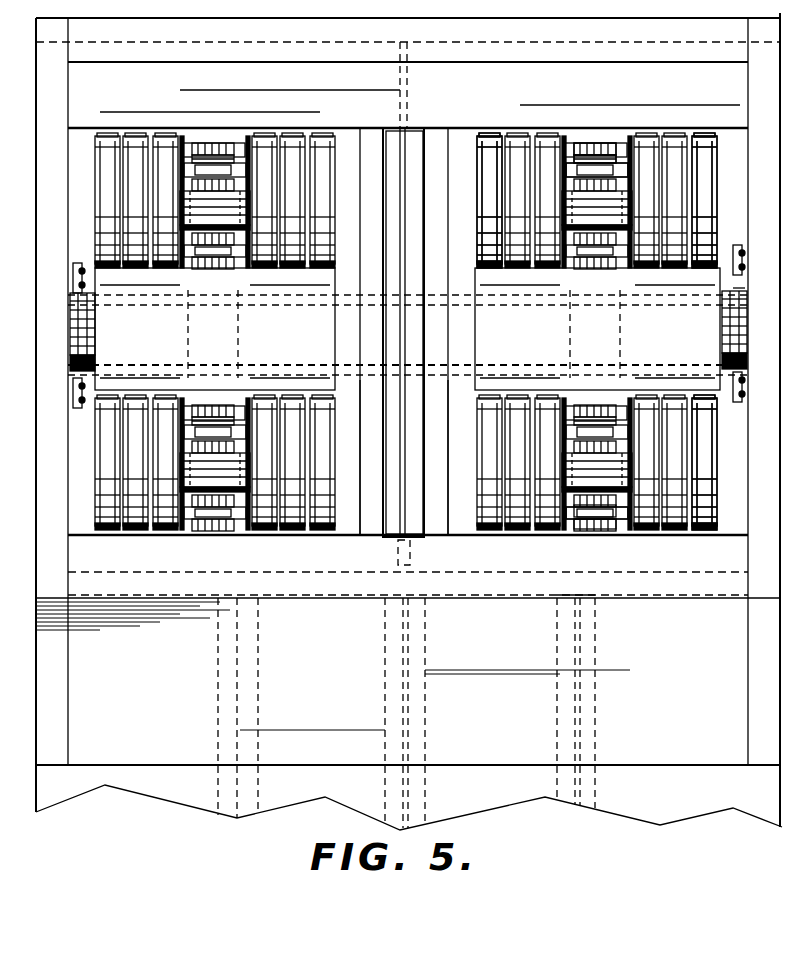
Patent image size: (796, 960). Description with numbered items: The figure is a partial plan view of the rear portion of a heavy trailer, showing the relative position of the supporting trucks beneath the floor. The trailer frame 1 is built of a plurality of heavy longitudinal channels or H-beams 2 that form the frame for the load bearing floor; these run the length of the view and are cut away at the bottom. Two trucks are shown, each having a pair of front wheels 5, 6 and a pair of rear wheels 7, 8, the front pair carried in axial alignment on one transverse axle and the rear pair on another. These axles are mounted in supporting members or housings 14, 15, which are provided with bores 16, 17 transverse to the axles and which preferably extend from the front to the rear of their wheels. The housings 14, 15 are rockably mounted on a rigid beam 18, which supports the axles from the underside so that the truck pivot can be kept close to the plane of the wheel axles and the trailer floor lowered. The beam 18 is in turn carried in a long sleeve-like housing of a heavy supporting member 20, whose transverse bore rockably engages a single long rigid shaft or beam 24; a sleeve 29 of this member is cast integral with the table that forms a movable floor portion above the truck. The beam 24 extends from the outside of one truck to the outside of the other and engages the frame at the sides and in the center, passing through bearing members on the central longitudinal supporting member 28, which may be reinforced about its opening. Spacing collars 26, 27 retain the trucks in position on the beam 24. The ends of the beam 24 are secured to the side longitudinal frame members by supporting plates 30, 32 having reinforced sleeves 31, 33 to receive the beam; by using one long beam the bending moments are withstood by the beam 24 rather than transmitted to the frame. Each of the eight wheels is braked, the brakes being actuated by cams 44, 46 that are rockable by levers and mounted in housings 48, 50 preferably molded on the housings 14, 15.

The frame 1 is at (137, 765).
The longitudinal channels or H-beams 2 is at (36, 710).
The front wheel 5 is at (575, 520).
The front wheel 6 is at (712, 530).
The rear wheel 7 is at (487, 137).
The rear wheel 8 is at (680, 133).
The supporting member or housing 14 is at (620, 529).
The supporting member or housing 15 is at (628, 150).
The bore 16 is at (566, 585).
The bore 17 is at (586, 145).
The rigid beam 18 is at (596, 150).
The supporting member 20 is at (335, 315).
The rigid shaft or beam 24 is at (70, 330).
The spacing collar 26 is at (350, 375).
The spacing collar 27 is at (462, 372).
The central longitudinal supporting member 28 is at (424, 537).
The sleeve 29 is at (408, 334).
The supporting plate 30 is at (76, 405).
The reinforced sleeve 31 is at (76, 288).
The supporting plate 32 is at (744, 263).
The reinforced sleeve 33 is at (738, 290).
The cam 44 is at (232, 180).
The cam 46 is at (563, 150).
The housing 48 is at (566, 185).
The housing 50 is at (235, 143).